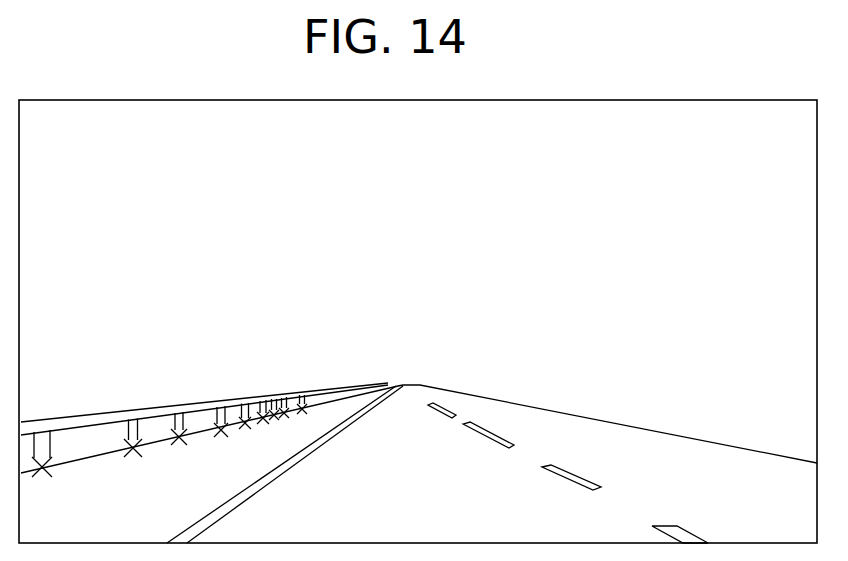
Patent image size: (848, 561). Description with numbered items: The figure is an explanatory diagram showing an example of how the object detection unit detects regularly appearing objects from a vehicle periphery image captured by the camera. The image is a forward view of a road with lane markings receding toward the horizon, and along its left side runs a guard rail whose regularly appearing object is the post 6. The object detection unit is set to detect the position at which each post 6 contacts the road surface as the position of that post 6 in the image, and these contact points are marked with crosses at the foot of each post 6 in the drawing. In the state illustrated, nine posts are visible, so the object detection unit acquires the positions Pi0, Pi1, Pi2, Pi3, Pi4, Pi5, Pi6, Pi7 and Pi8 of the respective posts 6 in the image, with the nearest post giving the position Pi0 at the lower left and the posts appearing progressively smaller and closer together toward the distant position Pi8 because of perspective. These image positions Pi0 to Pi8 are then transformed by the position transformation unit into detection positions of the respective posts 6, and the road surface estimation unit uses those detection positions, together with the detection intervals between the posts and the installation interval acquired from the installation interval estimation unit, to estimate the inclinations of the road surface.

The post 6 is at (42, 437).
The position of post in the image Pi0 is at (50, 473).
The position of post in the image Pi1 is at (131, 455).
The position of post in the image Pi2 is at (176, 446).
The position of post in the image Pi3 is at (218, 440).
The position of post in the image Pi4 is at (245, 433).
The position of post in the image Pi5 is at (262, 429).
The position of post in the image Pi6 is at (277, 421).
The position of post in the image Pi7 is at (287, 418).
The position of post in the image Pi8 is at (305, 412).